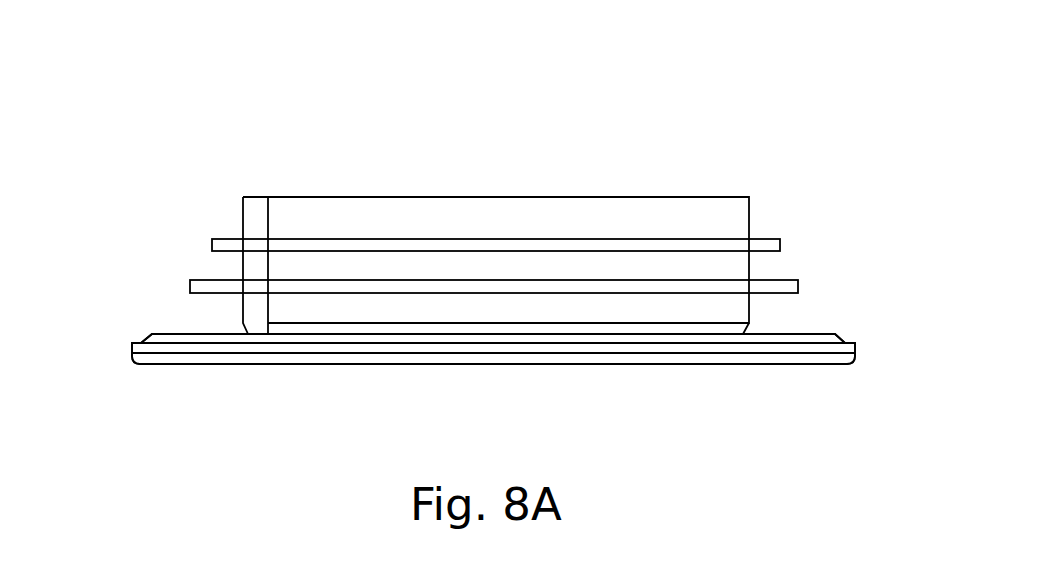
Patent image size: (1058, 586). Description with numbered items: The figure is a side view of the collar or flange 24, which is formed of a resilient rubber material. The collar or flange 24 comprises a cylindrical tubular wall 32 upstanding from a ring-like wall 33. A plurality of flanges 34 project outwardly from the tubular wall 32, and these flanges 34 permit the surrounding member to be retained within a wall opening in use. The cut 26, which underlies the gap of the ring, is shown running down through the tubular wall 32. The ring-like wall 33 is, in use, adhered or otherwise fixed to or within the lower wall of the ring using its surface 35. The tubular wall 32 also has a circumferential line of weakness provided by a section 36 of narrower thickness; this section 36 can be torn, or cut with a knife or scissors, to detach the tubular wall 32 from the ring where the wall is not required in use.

The collar or flange 24 is at (248, 115).
The cut 26 is at (269, 214).
The cylindrical tubular wall 32 is at (750, 212).
The ring-like wall 33 is at (866, 327).
The flanges 34 is at (188, 282).
The surface 35 is at (713, 358).
The section of narrower thickness 36 is at (745, 333).